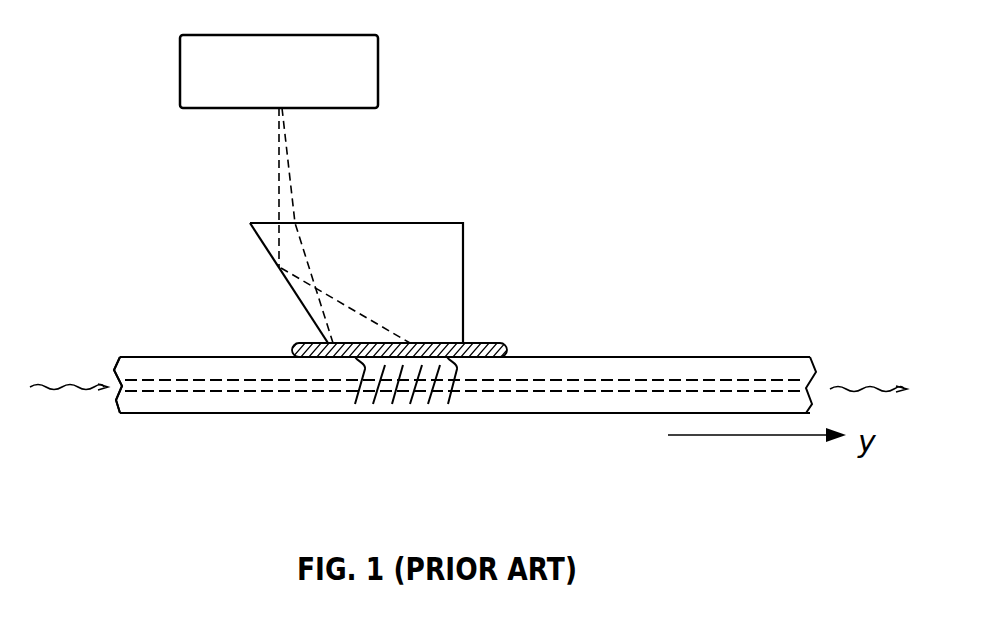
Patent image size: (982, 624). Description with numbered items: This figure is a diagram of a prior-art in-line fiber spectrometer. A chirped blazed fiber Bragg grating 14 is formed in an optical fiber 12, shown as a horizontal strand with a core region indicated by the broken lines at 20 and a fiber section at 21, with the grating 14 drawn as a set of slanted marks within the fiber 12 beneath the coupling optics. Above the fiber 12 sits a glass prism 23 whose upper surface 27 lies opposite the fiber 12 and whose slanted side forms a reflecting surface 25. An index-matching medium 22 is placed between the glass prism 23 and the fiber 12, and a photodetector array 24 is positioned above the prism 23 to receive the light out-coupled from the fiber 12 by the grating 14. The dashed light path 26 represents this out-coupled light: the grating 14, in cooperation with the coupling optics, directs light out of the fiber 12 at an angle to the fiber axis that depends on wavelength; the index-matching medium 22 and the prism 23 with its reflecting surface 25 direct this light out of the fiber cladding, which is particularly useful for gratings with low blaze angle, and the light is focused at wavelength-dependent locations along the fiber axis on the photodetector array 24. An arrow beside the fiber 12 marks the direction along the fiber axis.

The optical fiber 12 is at (297, 416).
The chirped blazed fiber Bragg grating 14 is at (437, 433).
The magnetic recording layer 20 is at (170, 378).
The medium edge 21 is at (120, 405).
The index-matching medium 22 is at (500, 343).
The glass prism 23 is at (365, 263).
The photodetector array 24 is at (378, 48).
The reflecting surface 25 is at (268, 253).
The light beam 26 is at (290, 181).
The top surface of optical body 27 is at (417, 223).